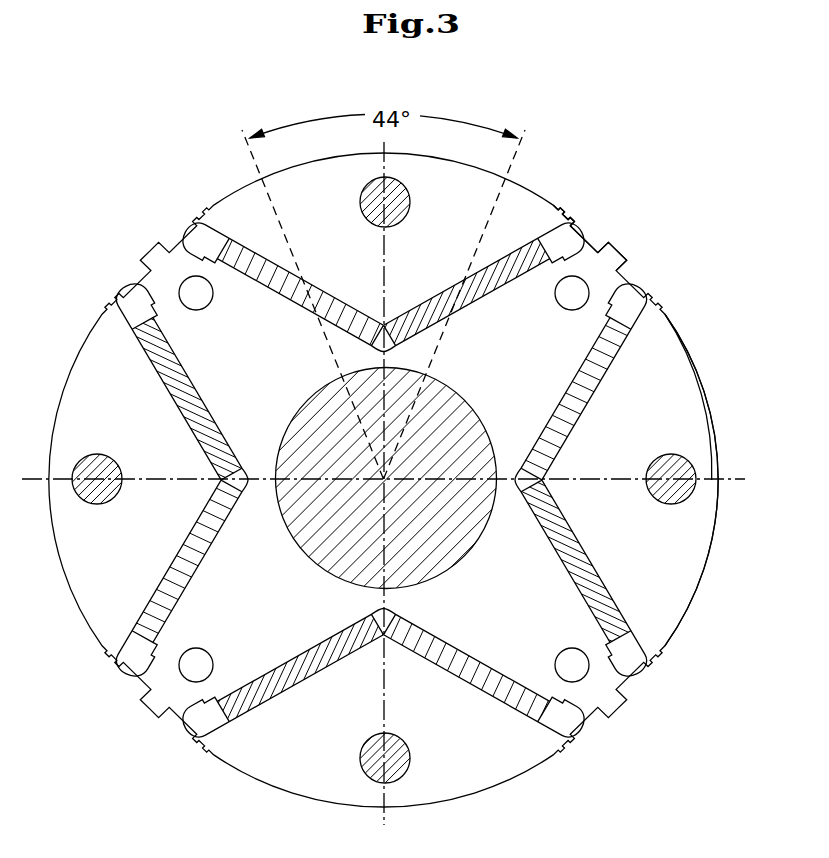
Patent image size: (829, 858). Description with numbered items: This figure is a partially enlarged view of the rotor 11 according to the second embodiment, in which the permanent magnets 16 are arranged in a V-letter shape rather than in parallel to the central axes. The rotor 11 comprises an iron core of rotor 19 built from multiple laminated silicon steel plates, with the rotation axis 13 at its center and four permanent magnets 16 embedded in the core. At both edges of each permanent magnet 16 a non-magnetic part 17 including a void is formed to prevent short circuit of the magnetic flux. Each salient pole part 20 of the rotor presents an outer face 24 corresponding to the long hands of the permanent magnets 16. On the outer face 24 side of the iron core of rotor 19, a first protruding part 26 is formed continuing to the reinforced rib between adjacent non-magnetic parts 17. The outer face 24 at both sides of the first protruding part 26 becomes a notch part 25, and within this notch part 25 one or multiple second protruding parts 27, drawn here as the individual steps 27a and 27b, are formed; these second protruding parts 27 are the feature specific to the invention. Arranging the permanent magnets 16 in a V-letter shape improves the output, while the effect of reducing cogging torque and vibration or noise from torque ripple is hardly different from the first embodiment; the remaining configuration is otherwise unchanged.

The rotor 11 is at (685, 568).
The rotation axis 13 is at (457, 410).
The permanent magnet 16 is at (338, 307).
The non-magnetic part 17 is at (563, 258).
The iron core of rotor 19 is at (695, 412).
The salient pole part 20 is at (426, 174).
The outer face 24 is at (703, 374).
The notch part 25 is at (587, 240).
The first protruding part 26 is at (622, 243).
The second protruding part 27 is at (636, 155).
The first step portion 27a is at (556, 205).
The second step portion 27b is at (572, 217).